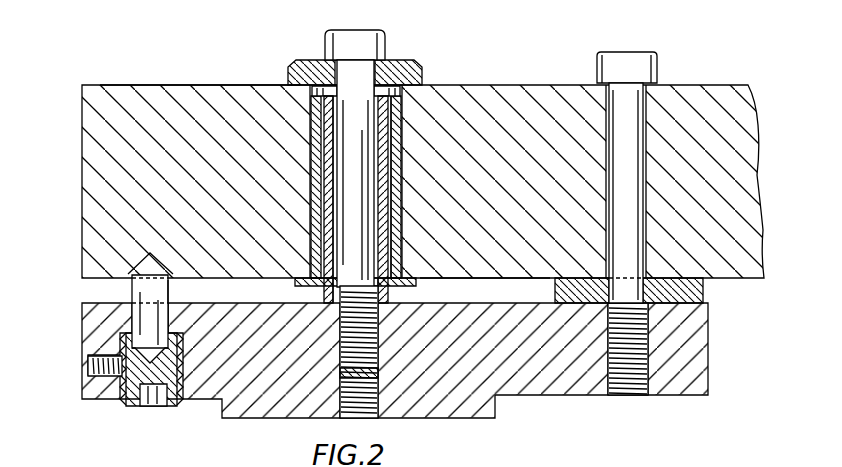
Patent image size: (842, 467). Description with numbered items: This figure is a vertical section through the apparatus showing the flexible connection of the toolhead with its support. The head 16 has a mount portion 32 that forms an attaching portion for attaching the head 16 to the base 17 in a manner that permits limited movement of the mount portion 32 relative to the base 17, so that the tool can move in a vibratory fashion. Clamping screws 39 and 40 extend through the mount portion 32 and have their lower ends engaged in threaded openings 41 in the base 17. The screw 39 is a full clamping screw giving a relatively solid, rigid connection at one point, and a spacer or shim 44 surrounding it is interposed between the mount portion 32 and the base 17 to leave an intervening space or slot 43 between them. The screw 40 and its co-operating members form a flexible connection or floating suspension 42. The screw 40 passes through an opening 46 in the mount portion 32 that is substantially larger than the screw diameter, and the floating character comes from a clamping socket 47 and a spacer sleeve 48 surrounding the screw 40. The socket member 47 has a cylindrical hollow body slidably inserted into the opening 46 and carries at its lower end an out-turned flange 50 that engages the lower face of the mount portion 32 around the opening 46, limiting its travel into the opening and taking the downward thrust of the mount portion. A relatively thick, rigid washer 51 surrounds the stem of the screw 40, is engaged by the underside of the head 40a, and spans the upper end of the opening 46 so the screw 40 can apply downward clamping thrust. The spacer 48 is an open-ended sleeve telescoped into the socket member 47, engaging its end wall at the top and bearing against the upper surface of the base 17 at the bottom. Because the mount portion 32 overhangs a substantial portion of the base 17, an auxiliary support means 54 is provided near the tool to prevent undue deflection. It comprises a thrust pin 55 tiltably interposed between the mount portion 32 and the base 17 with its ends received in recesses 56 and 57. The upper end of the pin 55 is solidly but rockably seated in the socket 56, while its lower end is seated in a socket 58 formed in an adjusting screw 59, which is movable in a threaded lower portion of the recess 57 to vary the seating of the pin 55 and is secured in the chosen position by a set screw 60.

The head 16 is at (500, 75).
The base 17 is at (703, 357).
The mount portion 32 is at (218, 85).
The full clamping screw 39 is at (638, 64).
The clamping screw 40 is at (342, 130).
The head of screw 40a is at (358, 45).
The threaded openings 41 is at (380, 388).
The floating suspension 42 is at (402, 130).
The slot 43 is at (471, 292).
The spacer 44 is at (703, 291).
The opening 46 is at (399, 171).
The clamping socket 47 is at (389, 206).
The spacer sleeve 48 is at (388, 232).
The out-turned flange 50 is at (406, 284).
The washer 51 is at (310, 64).
The auxiliary support means 54 is at (130, 300).
The thrust pin 55 is at (170, 292).
The recess 56 is at (128, 272).
The recess 57 is at (173, 327).
The socket 58 is at (184, 356).
The adjusting screw 59 is at (186, 378).
The set screw 60 is at (90, 367).